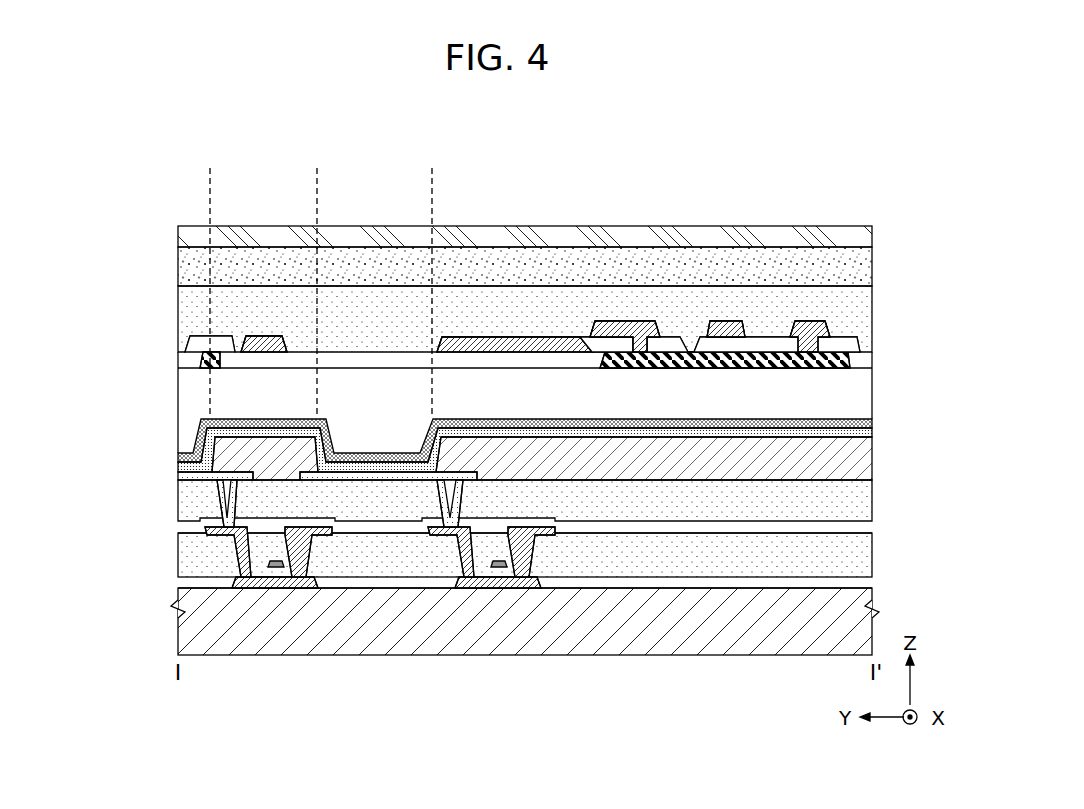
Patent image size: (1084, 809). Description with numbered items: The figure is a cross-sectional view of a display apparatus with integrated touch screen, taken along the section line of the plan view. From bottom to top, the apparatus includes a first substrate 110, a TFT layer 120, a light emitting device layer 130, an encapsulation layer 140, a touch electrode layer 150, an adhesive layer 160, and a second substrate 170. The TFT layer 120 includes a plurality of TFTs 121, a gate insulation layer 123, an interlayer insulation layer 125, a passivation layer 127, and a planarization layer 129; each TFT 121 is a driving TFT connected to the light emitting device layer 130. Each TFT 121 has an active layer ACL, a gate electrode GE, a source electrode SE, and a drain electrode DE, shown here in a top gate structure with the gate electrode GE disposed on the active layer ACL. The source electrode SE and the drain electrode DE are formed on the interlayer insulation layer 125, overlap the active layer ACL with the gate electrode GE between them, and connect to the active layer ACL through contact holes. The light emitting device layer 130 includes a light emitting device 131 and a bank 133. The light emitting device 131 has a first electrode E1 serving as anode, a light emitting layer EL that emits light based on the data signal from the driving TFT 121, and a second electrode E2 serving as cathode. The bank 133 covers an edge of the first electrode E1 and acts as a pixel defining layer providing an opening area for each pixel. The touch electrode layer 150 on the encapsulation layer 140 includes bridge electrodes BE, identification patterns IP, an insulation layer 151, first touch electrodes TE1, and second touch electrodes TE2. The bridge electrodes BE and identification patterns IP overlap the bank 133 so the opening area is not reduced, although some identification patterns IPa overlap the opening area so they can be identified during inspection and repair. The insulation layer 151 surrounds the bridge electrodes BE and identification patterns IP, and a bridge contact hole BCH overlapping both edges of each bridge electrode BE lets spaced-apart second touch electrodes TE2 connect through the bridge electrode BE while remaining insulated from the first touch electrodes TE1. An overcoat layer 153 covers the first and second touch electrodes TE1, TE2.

The first substrate 110 is at (178, 640).
The TFT layer 120 is at (515, 615).
The TFT 121 is at (371, 638).
The gate insulation layer 123 is at (178, 585).
The interlayer insulation layer 125 is at (178, 558).
The passivation layer 127 is at (178, 533).
The planarization layer 129 is at (178, 513).
The light emitting device layer 130 is at (491, 459).
The light emitting device 131 is at (460, 473).
The bank 133 is at (230, 452).
The encapsulation layer 140 is at (867, 395).
The touch electrode layer 150 is at (525, 268).
The insulation layer 151 is at (178, 360).
The overcoat layer 153 is at (178, 305).
The adhesive layer 160 is at (178, 270).
The second substrate 170 is at (178, 238).
The source electrode SE is at (220, 530).
The gate electrode GE is at (277, 568).
The active layer ACL is at (300, 588).
The drain electrode DE is at (420, 617).
The first electrode E1 is at (178, 476).
The light emitting layer EL is at (178, 467).
The second electrode E2 is at (178, 458).
The identification pattern IP is at (220, 352).
The identification pattern overlapping the opening area IPa is at (200, 350).
The first touch electrode TE1 is at (727, 330).
The second touch electrode TE2 is at (261, 342).
The bridge electrode BE is at (682, 358).
The bridge contact hole BCH is at (607, 343).